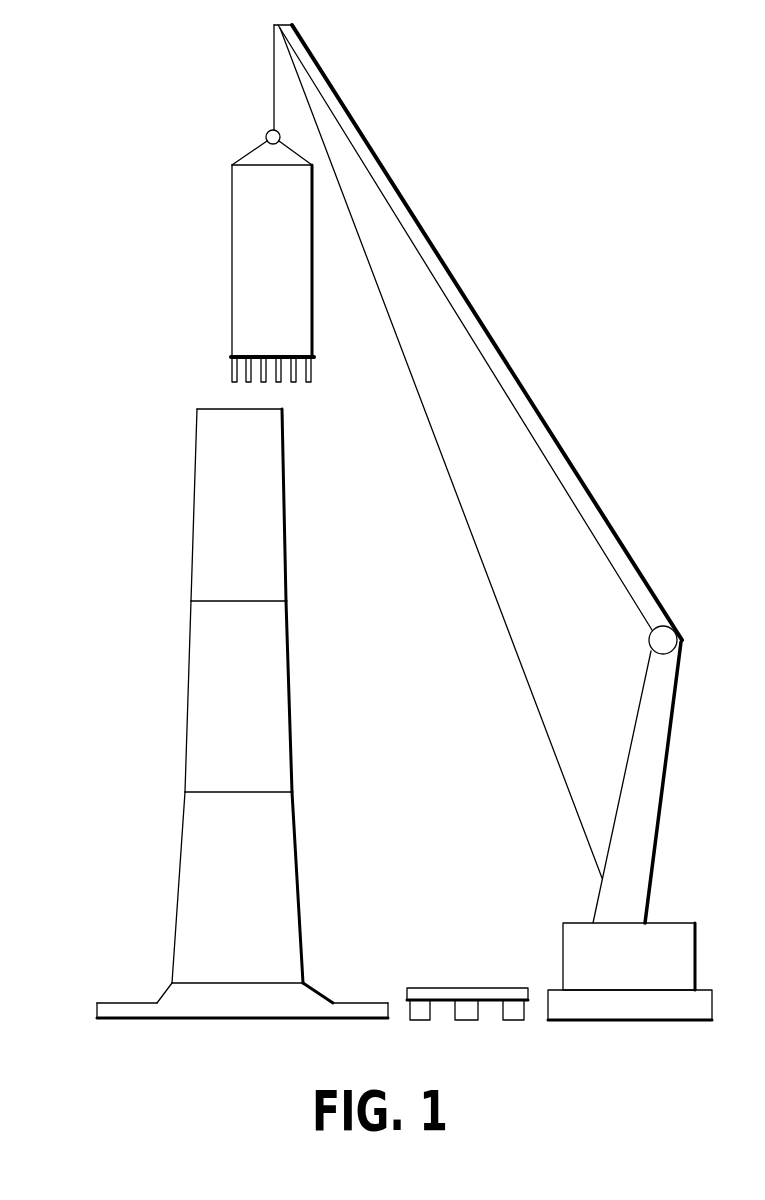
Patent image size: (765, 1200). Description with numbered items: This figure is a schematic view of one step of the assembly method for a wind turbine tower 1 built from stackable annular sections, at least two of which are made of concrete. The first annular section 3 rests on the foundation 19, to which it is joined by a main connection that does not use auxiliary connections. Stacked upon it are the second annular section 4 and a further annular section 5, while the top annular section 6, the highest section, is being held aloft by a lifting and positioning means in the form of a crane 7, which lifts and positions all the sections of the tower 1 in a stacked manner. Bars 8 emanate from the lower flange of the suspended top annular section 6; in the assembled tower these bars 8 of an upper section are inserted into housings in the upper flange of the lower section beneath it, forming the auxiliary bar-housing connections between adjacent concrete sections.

The tower 1 is at (127, 581).
The first annular section 3 is at (190, 893).
The second annular section 4 is at (203, 742).
The annular section 5 is at (208, 458).
The top annular section 6 is at (247, 301).
The crane 7 is at (538, 428).
The bars 8 is at (233, 368).
The foundation 19 is at (182, 1008).